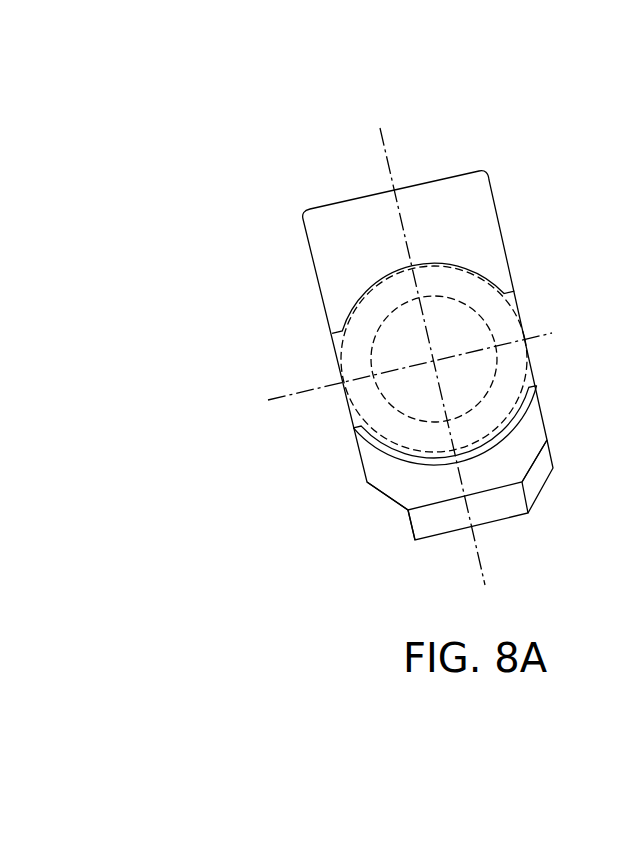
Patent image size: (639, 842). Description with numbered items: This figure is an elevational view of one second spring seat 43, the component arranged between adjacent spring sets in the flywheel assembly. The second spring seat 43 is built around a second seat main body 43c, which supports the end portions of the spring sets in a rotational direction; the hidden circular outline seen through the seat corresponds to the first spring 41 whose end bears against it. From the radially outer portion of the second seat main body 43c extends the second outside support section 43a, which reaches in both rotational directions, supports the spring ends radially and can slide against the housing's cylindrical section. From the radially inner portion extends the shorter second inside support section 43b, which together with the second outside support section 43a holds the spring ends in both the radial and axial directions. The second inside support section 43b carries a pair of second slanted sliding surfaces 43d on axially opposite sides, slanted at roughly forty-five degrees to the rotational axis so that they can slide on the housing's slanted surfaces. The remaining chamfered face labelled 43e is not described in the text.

The first spring 41 is at (638, 181).
The second spring seat 43 is at (293, 208).
The second outside support section 43a is at (462, 193).
The second inside support section 43b is at (482, 473).
The second seat main body 43c is at (390, 361).
The second slanted sliding surface 43d is at (387, 510).
The right chamfered corner face 43e is at (543, 475).